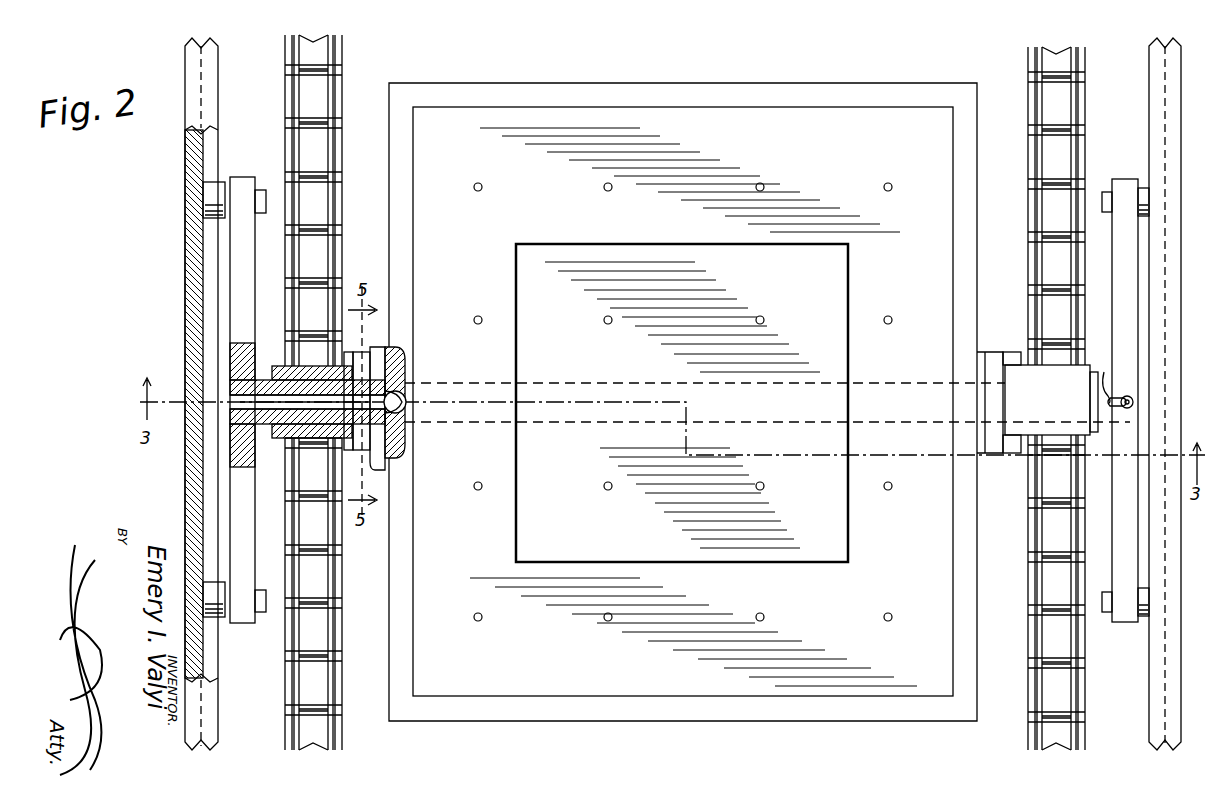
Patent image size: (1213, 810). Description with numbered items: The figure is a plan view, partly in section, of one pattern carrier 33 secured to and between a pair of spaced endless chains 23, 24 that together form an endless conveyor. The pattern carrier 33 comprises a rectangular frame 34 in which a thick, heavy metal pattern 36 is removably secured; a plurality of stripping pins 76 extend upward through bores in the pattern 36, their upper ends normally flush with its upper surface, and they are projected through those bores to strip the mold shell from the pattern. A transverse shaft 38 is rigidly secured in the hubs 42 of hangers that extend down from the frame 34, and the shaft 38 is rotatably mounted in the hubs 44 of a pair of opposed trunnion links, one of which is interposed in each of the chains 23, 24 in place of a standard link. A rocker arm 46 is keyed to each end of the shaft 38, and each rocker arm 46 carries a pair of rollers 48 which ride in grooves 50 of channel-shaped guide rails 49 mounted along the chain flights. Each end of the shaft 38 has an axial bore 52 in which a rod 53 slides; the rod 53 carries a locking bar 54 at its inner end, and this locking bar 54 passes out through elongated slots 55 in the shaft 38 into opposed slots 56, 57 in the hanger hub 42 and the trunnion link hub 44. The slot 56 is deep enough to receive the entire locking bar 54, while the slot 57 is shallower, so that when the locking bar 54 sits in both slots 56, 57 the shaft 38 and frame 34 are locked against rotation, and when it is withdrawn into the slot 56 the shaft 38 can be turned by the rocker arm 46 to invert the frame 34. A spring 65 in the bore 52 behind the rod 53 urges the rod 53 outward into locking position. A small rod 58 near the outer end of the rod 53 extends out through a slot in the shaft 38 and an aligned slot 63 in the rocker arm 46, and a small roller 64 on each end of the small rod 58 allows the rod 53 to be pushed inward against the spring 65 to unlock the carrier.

The chain 23 is at (287, 690).
The chain 24 is at (1035, 740).
The pattern carrier 33 is at (654, 722).
The rectangular frame 34 is at (803, 88).
The pattern 36 is at (702, 236).
The transverse shaft 38 is at (905, 380).
The hanger hub 42 is at (402, 458).
The trunnion link hub 44 is at (292, 452).
The rocker arm 46 is at (240, 508).
The roller 48 is at (215, 203).
The guide rail 49 is at (185, 292).
The groove 50 is at (205, 333).
The axial bore 52 is at (283, 372).
The rod 53 is at (280, 432).
The locking bar 54 is at (365, 348).
The elongated slot 55 is at (404, 396).
The slot 56 is at (405, 360).
The slot 57 is at (349, 348).
The small rod 58 is at (1133, 405).
The slot 63 is at (1108, 372).
The small roller 64 is at (1128, 398).
The spring 65 is at (403, 406).
The stripping pin 76 is at (604, 187).